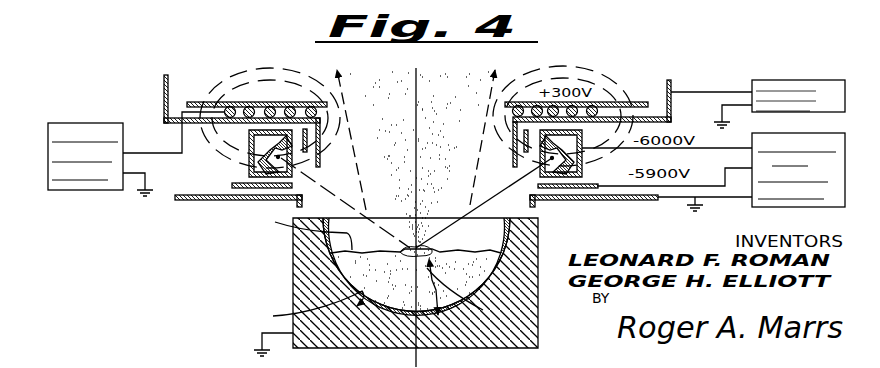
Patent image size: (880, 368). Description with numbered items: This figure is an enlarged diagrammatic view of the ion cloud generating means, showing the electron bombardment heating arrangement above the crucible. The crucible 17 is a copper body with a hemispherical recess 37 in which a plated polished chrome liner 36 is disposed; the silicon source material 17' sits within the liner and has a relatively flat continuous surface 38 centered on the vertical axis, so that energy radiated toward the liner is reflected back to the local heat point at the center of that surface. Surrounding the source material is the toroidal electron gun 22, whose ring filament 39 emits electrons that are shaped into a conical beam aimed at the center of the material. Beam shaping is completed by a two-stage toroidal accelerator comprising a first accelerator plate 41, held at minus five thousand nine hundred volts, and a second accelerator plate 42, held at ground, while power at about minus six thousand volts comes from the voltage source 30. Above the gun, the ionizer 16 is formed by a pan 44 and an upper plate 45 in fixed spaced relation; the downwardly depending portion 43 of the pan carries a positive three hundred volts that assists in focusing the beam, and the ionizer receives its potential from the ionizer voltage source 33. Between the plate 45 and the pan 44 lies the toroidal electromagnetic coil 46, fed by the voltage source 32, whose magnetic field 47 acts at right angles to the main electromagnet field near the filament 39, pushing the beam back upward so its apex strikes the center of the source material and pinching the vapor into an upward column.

The ionizer 16 is at (675, 82).
The crucible 17 is at (387, 283).
The source material 17' is at (369, 280).
The electron gun 22 is at (249, 153).
The voltage source 30 is at (813, 207).
The voltage source 32 is at (95, 107).
The ionizer voltage source 33 is at (792, 80).
The chrome liner 36 is at (323, 240).
The hemispherical recess 37 is at (300, 308).
The surface 38 is at (294, 229).
The ring filament 39 is at (262, 166).
The first accelerator plate 41 is at (230, 193).
The second accelerator plate 42 is at (183, 200).
The downwardly depending portion 43 is at (318, 155).
The pan 44 is at (173, 124).
The plate 45 is at (266, 102).
The toroidal electromagnetic coil 46 is at (279, 108).
The magnetic field 47 is at (237, 85).